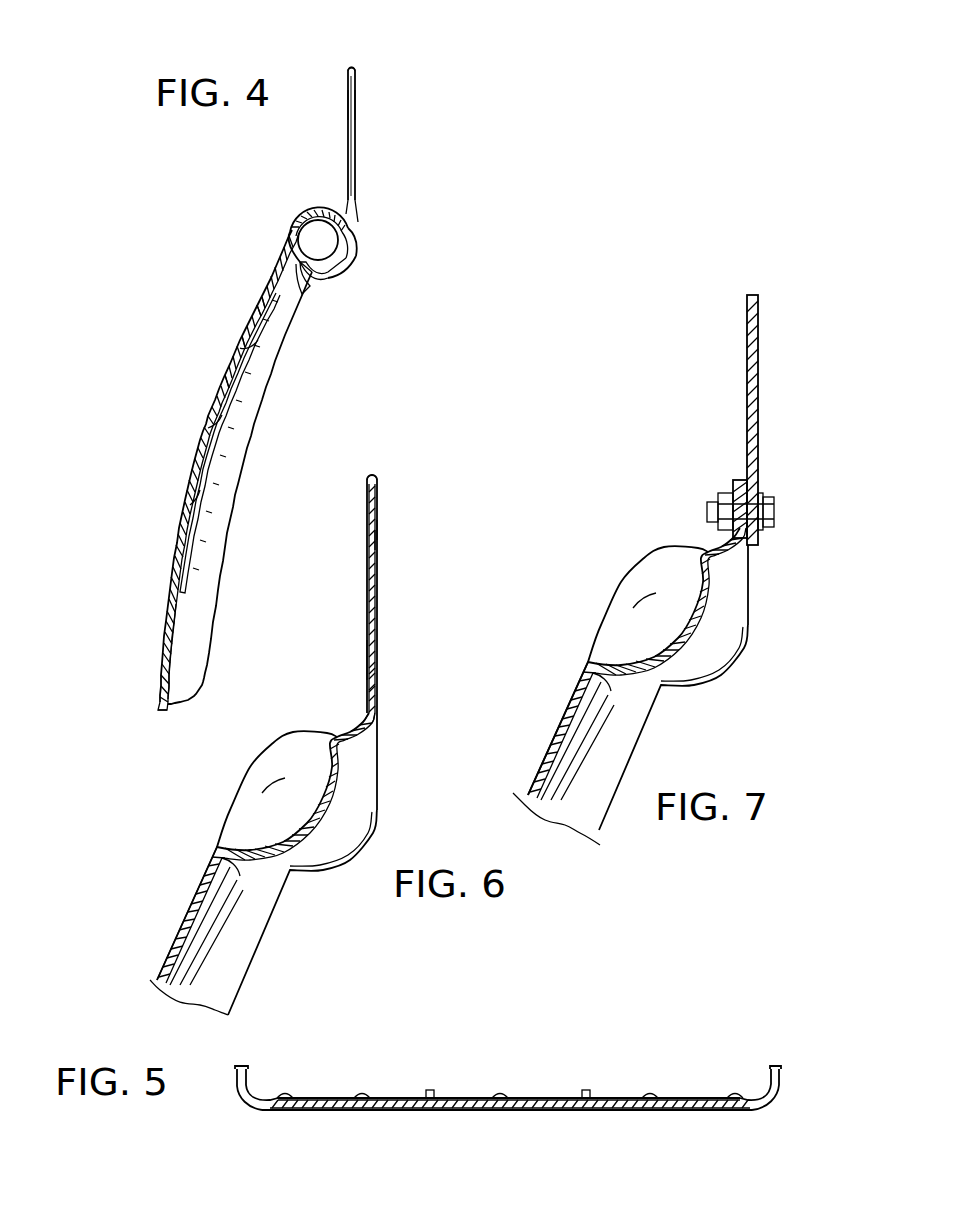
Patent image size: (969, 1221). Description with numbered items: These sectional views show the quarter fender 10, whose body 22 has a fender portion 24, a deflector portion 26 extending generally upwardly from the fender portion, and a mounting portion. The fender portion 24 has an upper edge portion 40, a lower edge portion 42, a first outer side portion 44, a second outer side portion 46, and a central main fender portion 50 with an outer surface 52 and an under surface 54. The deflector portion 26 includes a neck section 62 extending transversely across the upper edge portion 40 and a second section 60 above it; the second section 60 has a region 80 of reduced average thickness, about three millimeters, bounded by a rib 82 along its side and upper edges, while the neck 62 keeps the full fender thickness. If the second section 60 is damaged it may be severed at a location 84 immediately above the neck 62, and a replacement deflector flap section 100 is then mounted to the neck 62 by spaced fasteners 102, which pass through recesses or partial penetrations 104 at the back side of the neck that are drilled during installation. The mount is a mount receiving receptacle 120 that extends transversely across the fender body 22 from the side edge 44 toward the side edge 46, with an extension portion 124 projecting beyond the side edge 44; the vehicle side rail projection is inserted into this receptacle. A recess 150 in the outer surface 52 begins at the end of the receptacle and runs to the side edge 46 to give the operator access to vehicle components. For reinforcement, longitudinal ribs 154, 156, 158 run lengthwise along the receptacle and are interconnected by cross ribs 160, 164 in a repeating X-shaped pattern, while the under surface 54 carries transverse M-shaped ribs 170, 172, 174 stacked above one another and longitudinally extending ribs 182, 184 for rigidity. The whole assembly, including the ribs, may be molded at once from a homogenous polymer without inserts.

In FIG. 4, the quarter fender 10 is at (160, 594).
In FIG. 4, the body 22 is at (157, 668).
In FIG. 6, the body 22 is at (164, 958).
In FIG. 7, the body 22 is at (534, 772).
In FIG. 5, the body 22 is at (408, 1112).
In FIG. 4, the fender portion 24 is at (217, 388).
In FIG. 6, the fender portion 24 is at (194, 893).
In FIG. 7, the fender portion 24 is at (560, 710).
In FIG. 5, the fender portion 24 is at (532, 1112).
In FIG. 4, the deflector portion 26 is at (359, 92).
In FIG. 6, the deflector portion 26 is at (380, 516).
In FIG. 4, the upper edge portion 40 is at (320, 211).
In FIG. 4, the lower edge portion 42 is at (163, 712).
In FIG. 4, the first outer side portion 44 is at (200, 521).
In FIG. 5, the first outer side portion 44 is at (237, 1080).
In FIG. 6, the second outer side portion 46 is at (240, 949).
In FIG. 7, the second outer side portion 46 is at (612, 759).
In FIG. 5, the second outer side portion 46 is at (779, 1080).
In FIG. 4, the central main fender portion 50 is at (237, 357).
In FIG. 6, the central main fender portion 50 is at (185, 921).
In FIG. 7, the central main fender portion 50 is at (555, 736).
In FIG. 4, the outer surface 52 is at (168, 563).
In FIG. 5, the outer surface 52 is at (355, 1110).
In FIG. 4, the under surface 54 is at (180, 612).
In FIG. 4, the second section 60 is at (357, 106).
In FIG. 6, the second section 60 is at (379, 541).
In FIG. 4, the neck section 62 is at (360, 202).
In FIG. 6, the neck section 62 is at (378, 681).
In FIG. 7, the neck section 62 is at (740, 481).
In FIG. 4, the region of reduced average thickness 80 is at (348, 101).
In FIG. 6, the region of reduced average thickness 80 is at (379, 529).
In FIG. 4, the rib 82 is at (350, 64).
In FIG. 6, the rib 82 is at (366, 470).
In FIG. 6, the severing region 84 is at (363, 660).
In FIG. 7, the replacement deflector flap section 100 is at (761, 401).
In FIG. 7, the fastener 102 is at (775, 511).
In FIG. 6, the recess 104 is at (378, 692).
In FIG. 4, the mount receiving receptacle 120 is at (326, 245).
In FIG. 6, the extension portion of the receptacle 124 is at (253, 752).
In FIG. 7, the extension portion of the receptacle 124 is at (620, 573).
In FIG. 6, the recess 150 is at (262, 794).
In FIG. 7, the recess 150 is at (632, 608).
In FIG. 4, the longitudinal reinforcing rib 154 is at (358, 224).
In FIG. 4, the longitudinal reinforcing rib 156 is at (348, 268).
In FIG. 4, the longitudinal reinforcing rib 158 is at (306, 286).
In FIG. 4, the cross rib 160 is at (332, 278).
In FIG. 4, the cross rib 164 is at (356, 244).
In FIG. 4, the M-shaped reinforcing rib 170 is at (260, 339).
In FIG. 5, the M-shaped reinforcing rib 170 is at (284, 1097).
In FIG. 4, the M-shaped reinforcing rib 172 is at (223, 416).
In FIG. 5, the M-shaped reinforcing rib 172 is at (364, 1097).
In FIG. 4, the M-shaped reinforcing rib 174 is at (201, 491).
In FIG. 5, the M-shaped reinforcing rib 174 is at (546, 1097).
In FIG. 5, the longitudinally extending reinforcing rib 182 is at (586, 1090).
In FIG. 5, the longitudinally extending reinforcing rib 184 is at (431, 1090).